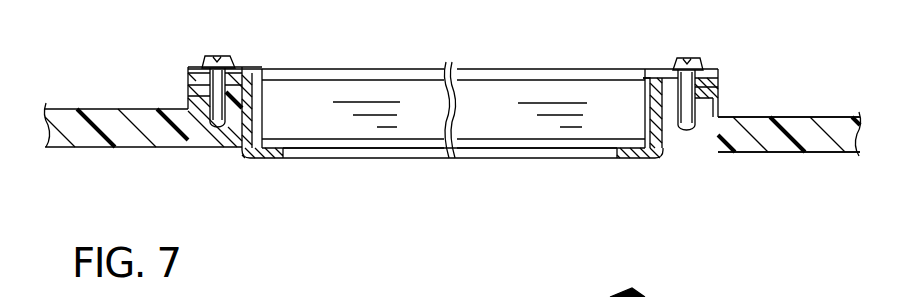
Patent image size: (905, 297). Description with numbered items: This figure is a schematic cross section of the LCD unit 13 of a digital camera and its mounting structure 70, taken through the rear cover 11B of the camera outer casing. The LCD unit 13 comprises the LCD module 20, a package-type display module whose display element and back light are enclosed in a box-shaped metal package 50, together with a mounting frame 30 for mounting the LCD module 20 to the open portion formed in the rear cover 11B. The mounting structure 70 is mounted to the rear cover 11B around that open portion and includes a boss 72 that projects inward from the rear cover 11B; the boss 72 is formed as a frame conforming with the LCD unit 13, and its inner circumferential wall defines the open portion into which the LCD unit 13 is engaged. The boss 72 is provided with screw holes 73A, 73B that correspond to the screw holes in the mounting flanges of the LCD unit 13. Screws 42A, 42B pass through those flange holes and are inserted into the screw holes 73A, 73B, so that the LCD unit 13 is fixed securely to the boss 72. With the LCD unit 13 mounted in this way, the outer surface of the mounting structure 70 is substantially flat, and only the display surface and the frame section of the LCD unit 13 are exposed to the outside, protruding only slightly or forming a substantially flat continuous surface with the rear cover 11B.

The rear cover 11B is at (800, 117).
The LCD unit 13 is at (370, 63).
The LCD module 20 is at (478, 132).
The mounting frame 30 is at (243, 140).
The screw 42A is at (211, 55).
The screw 42B is at (692, 58).
The box-shaped metal package 50 is at (643, 112).
The mounting structure 70 is at (718, 168).
The boss 72 is at (200, 130).
The screw hole 73A is at (213, 100).
The screw hole 73B is at (718, 100).